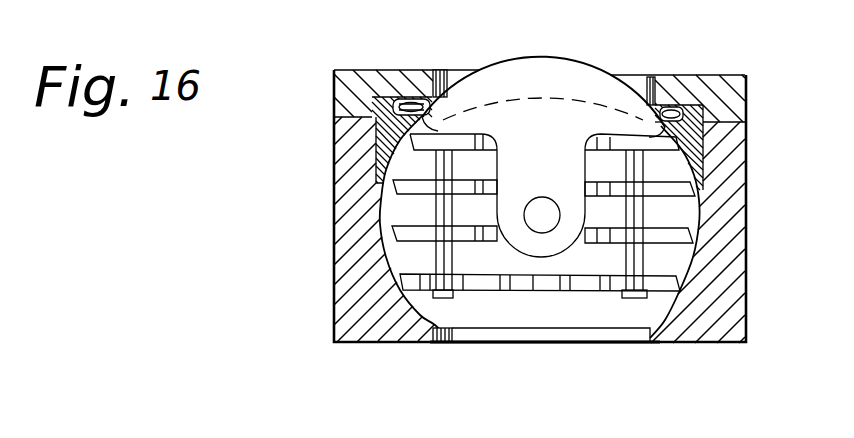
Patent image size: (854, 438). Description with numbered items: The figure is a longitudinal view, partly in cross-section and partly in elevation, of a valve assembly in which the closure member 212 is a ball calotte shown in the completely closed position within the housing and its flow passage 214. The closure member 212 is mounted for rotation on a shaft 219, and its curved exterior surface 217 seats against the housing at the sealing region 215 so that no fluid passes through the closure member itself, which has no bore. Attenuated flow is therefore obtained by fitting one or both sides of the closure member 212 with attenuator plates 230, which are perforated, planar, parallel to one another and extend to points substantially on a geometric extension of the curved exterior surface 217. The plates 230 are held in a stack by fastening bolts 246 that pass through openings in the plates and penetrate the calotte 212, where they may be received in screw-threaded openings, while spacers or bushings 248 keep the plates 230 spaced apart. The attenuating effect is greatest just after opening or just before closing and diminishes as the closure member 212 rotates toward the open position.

The closure member 212 is at (592, 78).
The flow passage 214 is at (637, 343).
The seal ring 215 is at (673, 107).
The curved exterior surface 217 is at (488, 66).
The shaft 219 is at (540, 207).
The attenuator plates 230 is at (680, 200).
The fastening bolts 246 is at (452, 330).
The spacers or bushings 248 is at (437, 257).